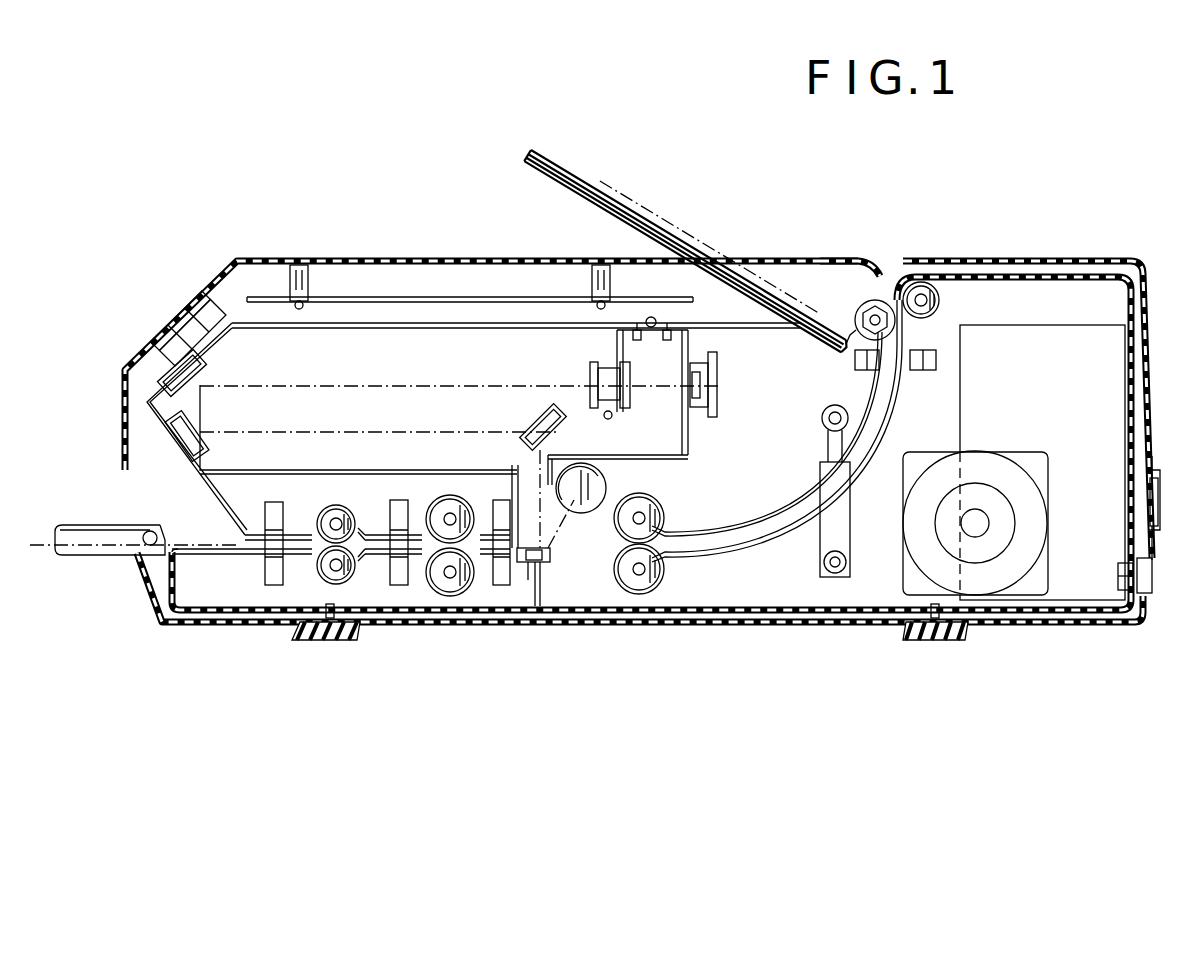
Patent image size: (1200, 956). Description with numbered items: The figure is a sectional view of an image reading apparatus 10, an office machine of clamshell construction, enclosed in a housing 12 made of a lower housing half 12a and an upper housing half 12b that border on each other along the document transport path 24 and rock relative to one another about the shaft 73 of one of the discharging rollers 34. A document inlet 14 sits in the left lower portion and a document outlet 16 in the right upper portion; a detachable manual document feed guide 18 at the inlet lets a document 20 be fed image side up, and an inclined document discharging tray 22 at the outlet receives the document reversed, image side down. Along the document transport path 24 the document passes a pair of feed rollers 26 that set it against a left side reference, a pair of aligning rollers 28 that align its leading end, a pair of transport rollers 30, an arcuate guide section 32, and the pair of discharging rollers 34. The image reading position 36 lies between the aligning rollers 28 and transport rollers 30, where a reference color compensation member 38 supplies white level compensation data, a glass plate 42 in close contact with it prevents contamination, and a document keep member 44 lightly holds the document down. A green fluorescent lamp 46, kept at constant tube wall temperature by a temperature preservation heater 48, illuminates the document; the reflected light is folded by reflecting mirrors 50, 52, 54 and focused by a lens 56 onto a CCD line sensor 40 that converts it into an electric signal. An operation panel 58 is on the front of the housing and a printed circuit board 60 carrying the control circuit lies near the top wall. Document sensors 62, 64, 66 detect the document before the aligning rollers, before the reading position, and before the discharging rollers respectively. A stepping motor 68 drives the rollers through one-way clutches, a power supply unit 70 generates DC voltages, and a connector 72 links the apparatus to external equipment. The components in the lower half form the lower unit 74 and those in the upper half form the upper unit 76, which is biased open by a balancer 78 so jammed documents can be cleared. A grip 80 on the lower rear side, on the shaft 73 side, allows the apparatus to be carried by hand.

The image reading apparatus 10 is at (774, 209).
The housing 12 is at (1062, 245).
The lower housing half 12a is at (825, 626).
The upper housing half 12b is at (268, 258).
The document inlet 14 is at (216, 536).
The document outlet 16 is at (888, 258).
The manual document feed guide 18 is at (93, 558).
The document 20 is at (664, 220).
The document discharging tray 22 is at (566, 169).
The document transport path 24 is at (700, 560).
The pair of feed rollers 26 is at (330, 510).
The pair of aligning rollers 28 is at (438, 508).
The pair of transport rollers 30 is at (665, 515).
The guide section 32 is at (776, 524).
The pair of discharging rollers 34 is at (942, 300).
The image reading position 36 is at (541, 599).
The reference color compensation member 38 is at (549, 566).
The CCD line sensor 40 is at (718, 383).
The glass plate 42 is at (528, 580).
The document keep member 44 is at (540, 478).
The fluorescent lamp 46 is at (590, 494).
The temperature preservation heater 48 is at (606, 476).
The reflecting mirror 50 is at (564, 440).
The reflecting mirror 52 is at (204, 440).
The reflecting mirror 54 is at (208, 372).
The lens 56 is at (590, 372).
The operation panel 58 is at (186, 318).
The printed circuit board 60 is at (378, 302).
The document sensor 62 is at (390, 572).
The document sensor 64 is at (495, 585).
The document sensor 66 is at (931, 372).
The stepping motor 68 is at (1033, 501).
The power supply unit 70 is at (1054, 327).
The connector 72 is at (1118, 579).
The shaft 73 is at (860, 316).
The lower unit 74 is at (706, 620).
The upper unit 76 is at (457, 274).
The balancer 78 is at (818, 554).
The grip 80 is at (1160, 521).